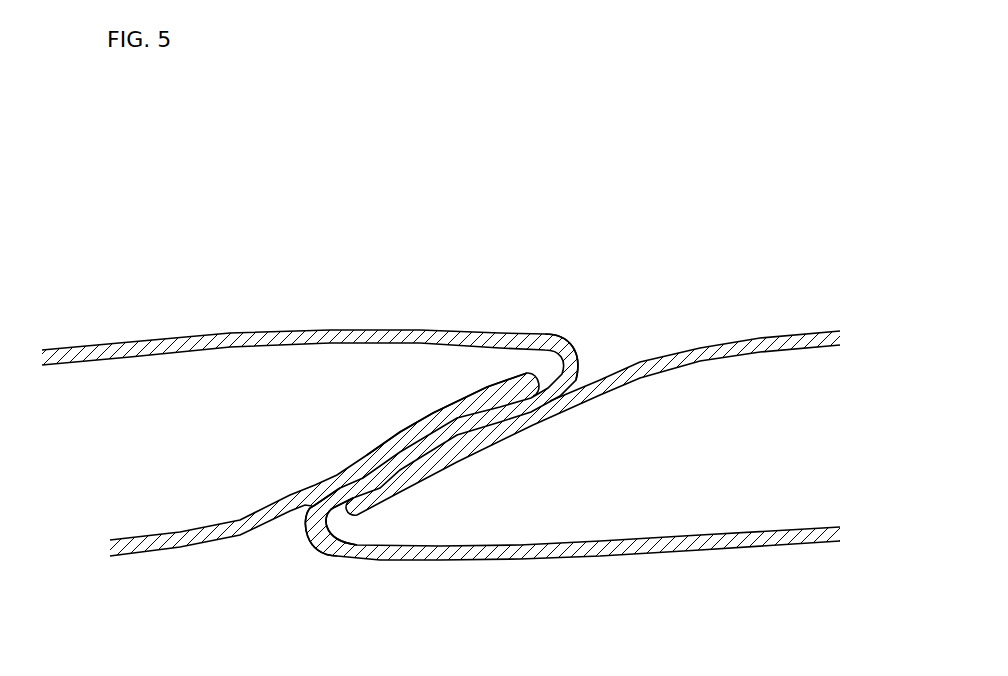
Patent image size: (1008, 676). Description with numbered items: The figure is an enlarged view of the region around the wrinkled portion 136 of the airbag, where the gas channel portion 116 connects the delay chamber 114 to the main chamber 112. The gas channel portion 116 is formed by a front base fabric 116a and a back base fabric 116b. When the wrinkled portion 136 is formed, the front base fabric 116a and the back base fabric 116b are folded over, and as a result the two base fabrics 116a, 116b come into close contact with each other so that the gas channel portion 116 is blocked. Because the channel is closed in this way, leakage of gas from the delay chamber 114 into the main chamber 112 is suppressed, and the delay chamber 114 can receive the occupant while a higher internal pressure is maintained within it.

The main chamber 112 is at (716, 343).
The delay chamber 114 is at (201, 333).
The gas channel portion 116 is at (435, 410).
The front base fabric 116a is at (435, 410).
The back base fabric 116b is at (602, 365).
The wrinkled portion 136 is at (303, 513).